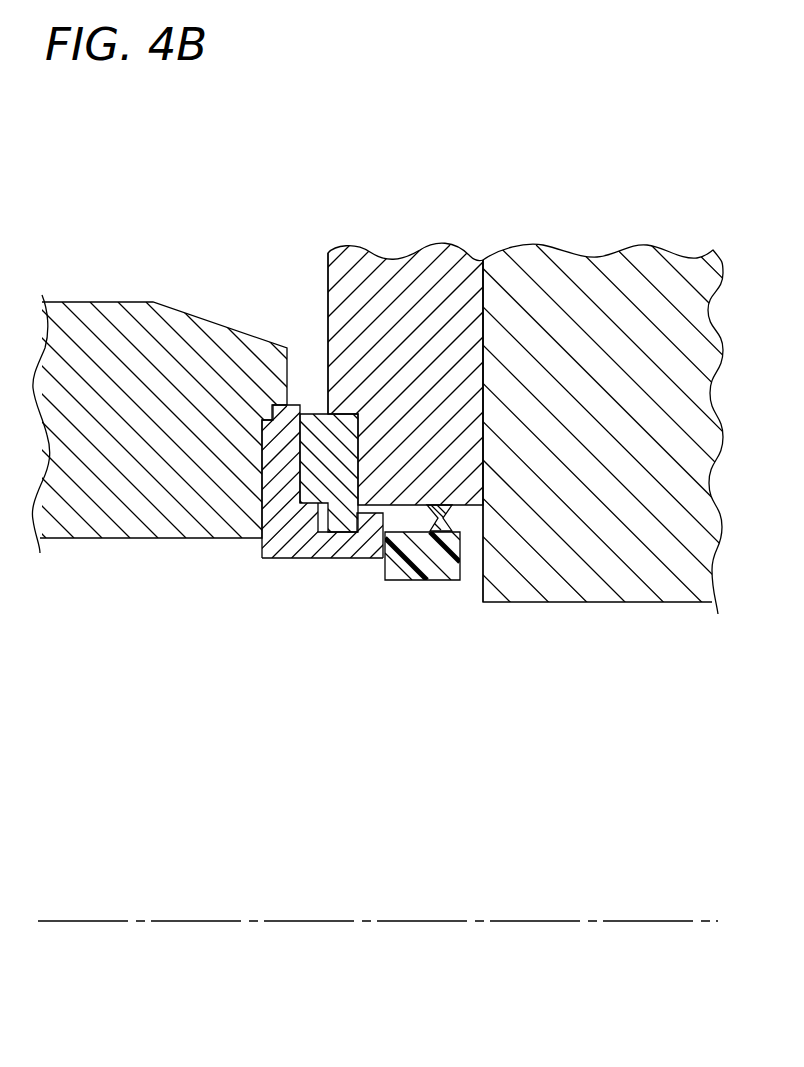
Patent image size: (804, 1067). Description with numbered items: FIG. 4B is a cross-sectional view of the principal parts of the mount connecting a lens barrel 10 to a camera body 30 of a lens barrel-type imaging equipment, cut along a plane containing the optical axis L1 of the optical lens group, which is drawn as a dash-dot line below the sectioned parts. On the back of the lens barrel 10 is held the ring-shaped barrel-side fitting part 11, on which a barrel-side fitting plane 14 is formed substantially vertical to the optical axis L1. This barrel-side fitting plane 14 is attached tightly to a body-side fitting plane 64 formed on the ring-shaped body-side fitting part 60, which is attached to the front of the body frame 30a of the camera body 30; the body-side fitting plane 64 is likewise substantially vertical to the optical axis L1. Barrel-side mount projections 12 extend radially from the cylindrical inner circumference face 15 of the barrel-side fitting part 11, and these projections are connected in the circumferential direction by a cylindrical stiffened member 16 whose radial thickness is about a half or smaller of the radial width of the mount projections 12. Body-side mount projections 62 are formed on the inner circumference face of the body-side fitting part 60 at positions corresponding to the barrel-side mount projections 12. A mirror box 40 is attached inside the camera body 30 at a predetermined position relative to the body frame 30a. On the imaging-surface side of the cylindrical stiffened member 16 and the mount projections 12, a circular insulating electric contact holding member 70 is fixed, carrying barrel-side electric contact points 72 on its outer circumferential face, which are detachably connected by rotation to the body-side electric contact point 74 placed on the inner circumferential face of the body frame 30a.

The lens barrel 10 is at (107, 330).
The barrel-side fitting part 11 is at (277, 476).
The barrel-side mount projections 12 is at (484, 340).
The barrel-side fitting plane 14 is at (335, 484).
The cylindrical inner circumference face 15 is at (277, 558).
The cylindrical stiffened member 16 is at (323, 560).
The camera body 30 is at (557, 233).
The body frame 30a is at (365, 288).
The mirror box 40 is at (630, 277).
The body-side fitting part 60 is at (362, 505).
The body-side mount projections 62 is at (340, 560).
The body-side fitting plane 64 is at (297, 560).
The electric contact holding member 70 is at (403, 580).
The barrel-side electric contact points 72 is at (437, 555).
The body-side electric contact point 74 is at (455, 510).
The optical axis L1 is at (282, 924).